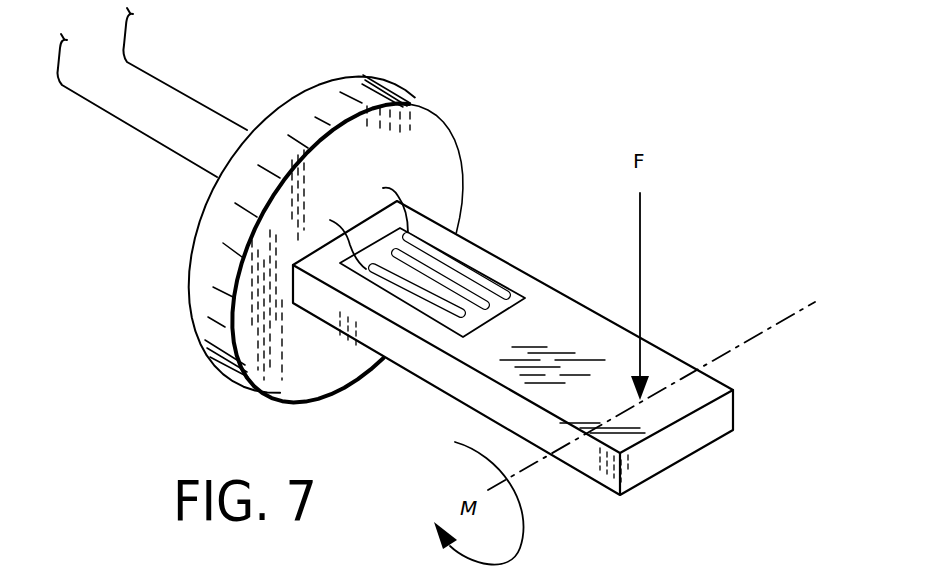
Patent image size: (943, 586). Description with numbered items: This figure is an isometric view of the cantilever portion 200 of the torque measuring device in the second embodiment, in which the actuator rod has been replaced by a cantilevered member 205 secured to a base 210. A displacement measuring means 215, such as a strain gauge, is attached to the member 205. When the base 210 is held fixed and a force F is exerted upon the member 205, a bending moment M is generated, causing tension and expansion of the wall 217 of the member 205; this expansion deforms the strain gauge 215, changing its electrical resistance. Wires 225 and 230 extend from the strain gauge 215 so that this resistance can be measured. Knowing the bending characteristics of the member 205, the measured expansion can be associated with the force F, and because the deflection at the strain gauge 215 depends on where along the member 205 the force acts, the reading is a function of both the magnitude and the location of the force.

The pressure sensor assembly 200 is at (175, 312).
The cantilevered member 205 is at (570, 310).
The base 210 is at (363, 88).
The displacement measuring means 215 is at (463, 272).
The wall 217 is at (548, 293).
The wire 225 is at (187, 88).
The wire 230 is at (117, 120).